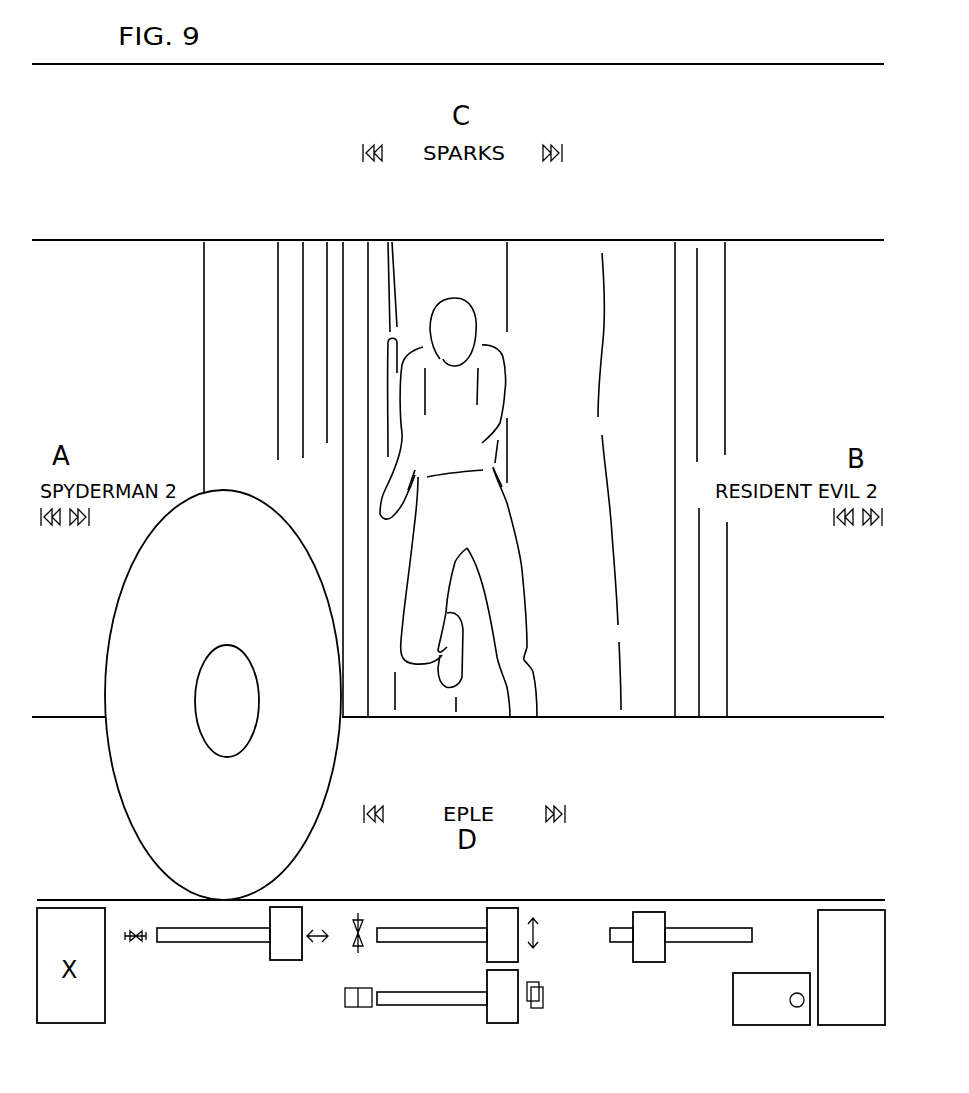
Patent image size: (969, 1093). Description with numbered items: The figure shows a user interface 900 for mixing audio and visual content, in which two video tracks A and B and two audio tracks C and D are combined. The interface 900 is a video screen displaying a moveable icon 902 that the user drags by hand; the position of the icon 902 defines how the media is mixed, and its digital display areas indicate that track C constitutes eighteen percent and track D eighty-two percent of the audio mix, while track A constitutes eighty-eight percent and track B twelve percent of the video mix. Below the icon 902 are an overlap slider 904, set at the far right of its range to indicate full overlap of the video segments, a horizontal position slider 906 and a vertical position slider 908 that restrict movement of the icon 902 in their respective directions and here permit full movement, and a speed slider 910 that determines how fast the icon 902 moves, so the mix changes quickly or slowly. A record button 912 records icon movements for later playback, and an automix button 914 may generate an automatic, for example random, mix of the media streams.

The user interface 900 is at (620, 72).
The icon 902 is at (307, 533).
The overlap slider 904 is at (512, 1010).
The horizontal position slider 906 is at (288, 915).
The vertical position slider 908 is at (502, 914).
The speed slider 910 is at (650, 914).
The record button 912 is at (737, 1017).
The automix button 914 is at (840, 912).